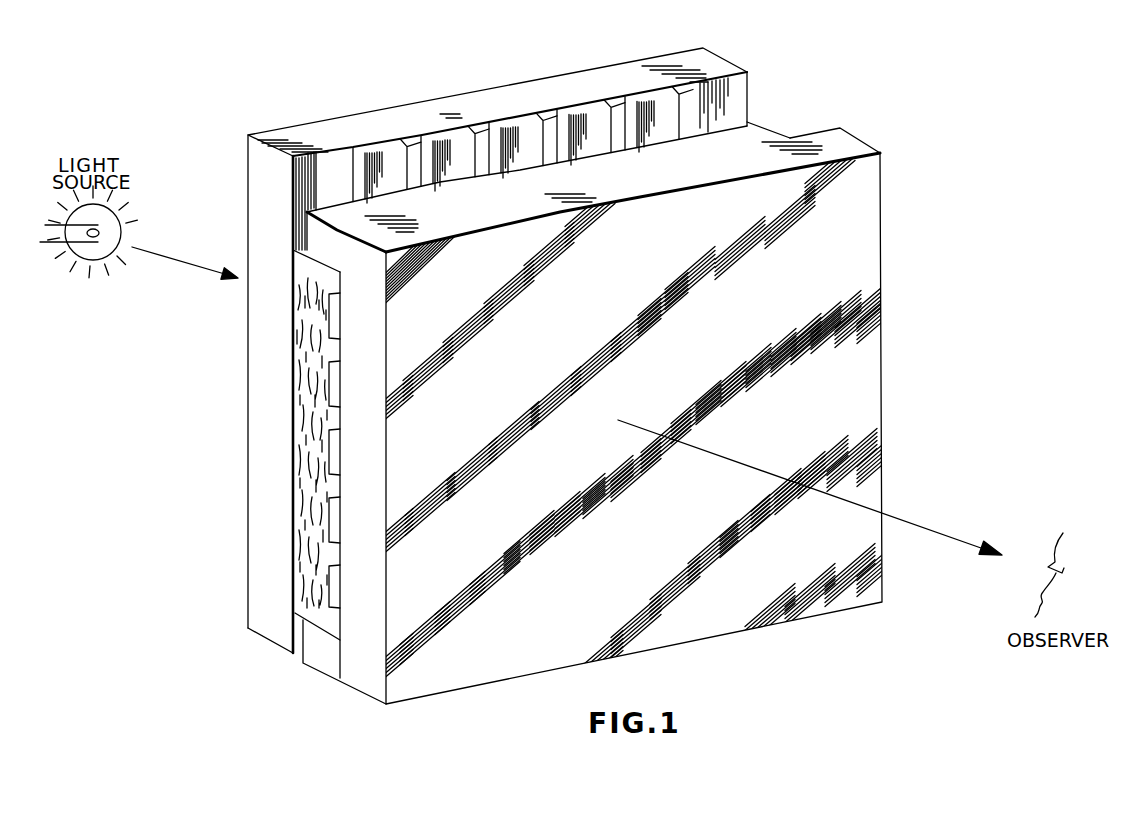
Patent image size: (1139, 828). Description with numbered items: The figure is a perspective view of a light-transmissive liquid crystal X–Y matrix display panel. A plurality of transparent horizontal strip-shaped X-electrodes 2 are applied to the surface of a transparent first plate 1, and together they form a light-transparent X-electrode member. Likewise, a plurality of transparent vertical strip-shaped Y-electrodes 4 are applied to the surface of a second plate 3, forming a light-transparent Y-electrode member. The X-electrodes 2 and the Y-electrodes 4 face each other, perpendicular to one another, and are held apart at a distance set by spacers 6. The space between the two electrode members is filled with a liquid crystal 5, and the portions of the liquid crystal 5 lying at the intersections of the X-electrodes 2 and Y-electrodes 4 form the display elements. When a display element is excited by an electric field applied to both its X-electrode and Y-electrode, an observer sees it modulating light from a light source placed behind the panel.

The first plate 1 is at (853, 143).
The X-electrodes 2 is at (333, 324).
The second plate 3 is at (662, 68).
The Y-electrodes 4 is at (385, 150).
The liquid crystal 5 is at (300, 297).
The spacers 6 is at (300, 237).